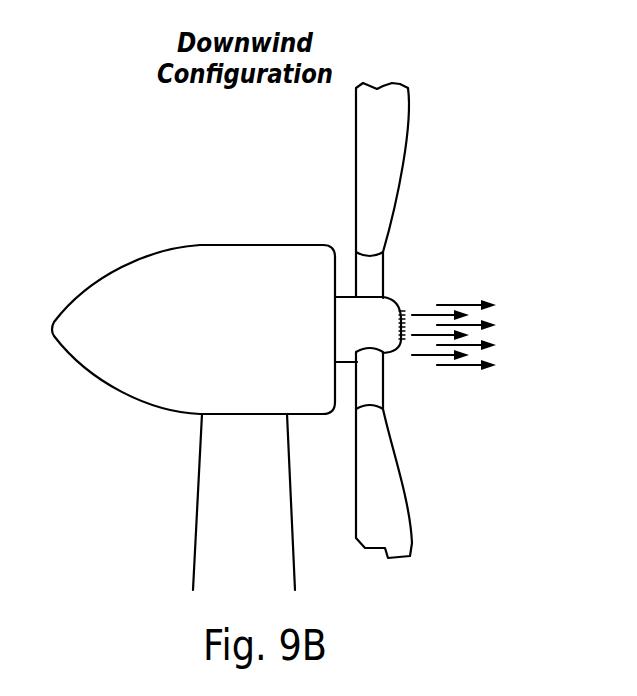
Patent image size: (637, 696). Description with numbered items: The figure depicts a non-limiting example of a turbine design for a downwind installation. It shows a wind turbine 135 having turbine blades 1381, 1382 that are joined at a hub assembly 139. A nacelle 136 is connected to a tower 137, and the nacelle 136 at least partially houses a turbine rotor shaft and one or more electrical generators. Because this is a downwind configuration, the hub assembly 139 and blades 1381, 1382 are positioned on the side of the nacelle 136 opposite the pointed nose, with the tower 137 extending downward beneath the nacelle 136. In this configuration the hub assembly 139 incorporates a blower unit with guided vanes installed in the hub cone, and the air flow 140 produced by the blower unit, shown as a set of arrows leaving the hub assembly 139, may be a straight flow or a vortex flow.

The wind turbine 135 is at (437, 248).
The nacelle 136 is at (222, 245).
The tower 137 is at (197, 542).
The turbine blade 1381 is at (400, 120).
The turbine blade 1382 is at (400, 520).
The hub assembly 139 is at (402, 346).
The air flow 140 is at (457, 304).